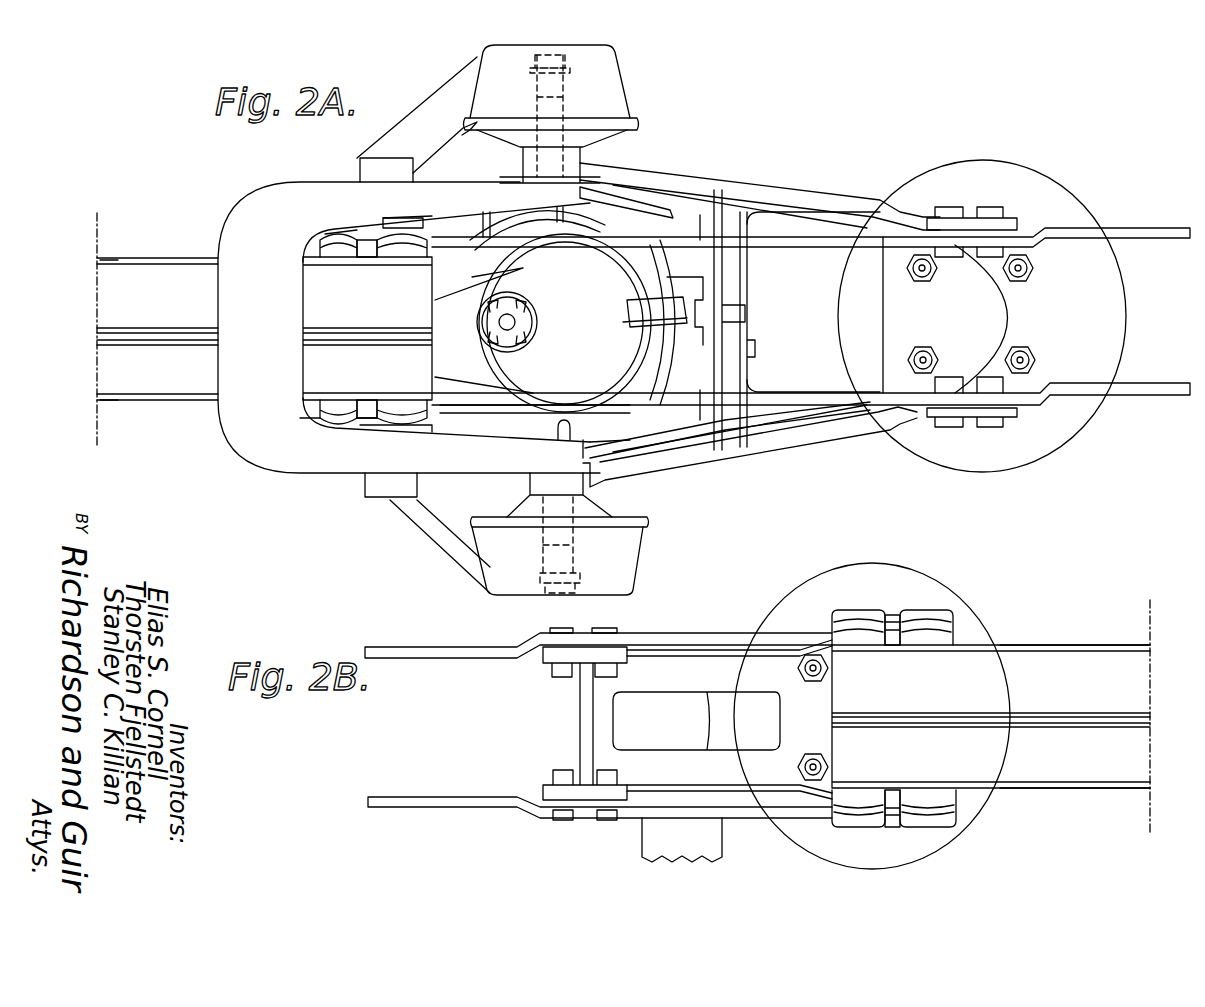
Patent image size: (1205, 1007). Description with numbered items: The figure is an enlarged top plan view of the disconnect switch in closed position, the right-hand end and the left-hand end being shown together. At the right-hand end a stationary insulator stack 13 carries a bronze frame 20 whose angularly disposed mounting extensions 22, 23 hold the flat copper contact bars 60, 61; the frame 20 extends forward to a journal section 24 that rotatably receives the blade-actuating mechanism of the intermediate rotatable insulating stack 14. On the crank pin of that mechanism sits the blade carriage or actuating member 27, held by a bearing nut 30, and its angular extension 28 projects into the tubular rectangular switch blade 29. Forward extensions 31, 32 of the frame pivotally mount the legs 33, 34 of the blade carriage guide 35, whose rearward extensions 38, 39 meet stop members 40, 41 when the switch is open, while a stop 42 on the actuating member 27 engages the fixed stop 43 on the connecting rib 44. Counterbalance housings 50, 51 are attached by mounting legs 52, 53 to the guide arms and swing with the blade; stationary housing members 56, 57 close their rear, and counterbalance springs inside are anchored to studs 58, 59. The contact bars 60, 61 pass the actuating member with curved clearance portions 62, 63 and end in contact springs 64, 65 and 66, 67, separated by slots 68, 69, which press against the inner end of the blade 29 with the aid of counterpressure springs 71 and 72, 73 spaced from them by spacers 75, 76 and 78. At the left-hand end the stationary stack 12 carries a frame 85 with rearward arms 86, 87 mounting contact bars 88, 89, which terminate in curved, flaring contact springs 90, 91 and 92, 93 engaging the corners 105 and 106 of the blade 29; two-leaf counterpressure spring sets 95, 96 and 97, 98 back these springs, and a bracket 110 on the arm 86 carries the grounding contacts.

In FIG. 2B, the stationary insulator stack 12 is at (1006, 604).
In FIG. 2A, the stationary insulator stack 13 is at (1088, 199).
In FIG. 2A, the rotatable insulating stack 14 is at (699, 204).
In FIG. 2A, the frame 20 is at (790, 190).
In FIG. 2A, the mounting extension 22 is at (1008, 420).
In FIG. 2A, the mounting extension 23 is at (1010, 210).
In FIG. 2A, the journal section 24 is at (638, 358).
In FIG. 2A, the blade carriage 27 is at (625, 300).
In FIG. 2A, the extension 28 is at (455, 335).
In FIG. 2A, the switch blade 29 is at (166, 262).
In FIG. 2B, the switch blade 29 is at (1130, 658).
In FIG. 2A, the bearing nut 30 is at (522, 318).
In FIG. 2A, the extension 31 is at (580, 485).
In FIG. 2A, the extension 32 is at (585, 157).
In FIG. 2A, the leg of blade carriage guide 33 is at (440, 490).
In FIG. 2A, the leg of blade carriage guide 34 is at (475, 182).
In FIG. 2A, the blade carriage guide 35 is at (232, 388).
In FIG. 2A, the rearward extension of guide arm 38 is at (630, 432).
In FIG. 2A, the rearward extension of guide arm 39 is at (650, 195).
In FIG. 2A, the stop member 40 is at (575, 428).
In FIG. 2A, the stop member 41 is at (550, 216).
In FIG. 2A, the stop member 42 is at (660, 322).
In FIG. 2A, the fixed stop 43 is at (745, 318).
In FIG. 2A, the connecting rib 44 is at (745, 368).
In FIG. 2A, the outer counterbalance housing 50 is at (630, 565).
In FIG. 2A, the outer counterbalance housing 51 is at (608, 65).
In FIG. 2A, the mounting leg 52 is at (452, 553).
In FIG. 2A, the mounting leg 53 is at (440, 112).
In FIG. 2A, the stationary counterbalance housing member 56 is at (638, 510).
In FIG. 2A, the stationary counterbalance housing member 57 is at (625, 138).
In FIG. 2A, the stud 58 is at (543, 545).
In FIG. 2A, the stud 59 is at (565, 108).
In FIG. 2A, the contact bar 60 is at (815, 392).
In FIG. 2A, the contact bar 61 is at (448, 248).
In FIG. 2A, the curved clearance portion 62 is at (537, 413).
In FIG. 2A, the curved clearance portion 63 is at (585, 242).
In FIG. 2A, the contact spring 64 is at (323, 418).
In FIG. 2A, the contact spring 65 is at (377, 420).
In FIG. 2A, the contact spring 66 is at (335, 250).
In FIG. 2A, the contact spring 67 is at (400, 250).
In FIG. 2A, the slot 68 is at (366, 405).
In FIG. 2A, the slot 69 is at (368, 250).
In FIG. 2A, the counterpressure spring 71 is at (420, 430).
In FIG. 2A, the counterpressure spring 72 is at (352, 228).
In FIG. 2A, the counterpressure spring 73 is at (415, 216).
In FIG. 2A, the spacer 75 is at (338, 425).
In FIG. 2A, the spacer 76 is at (400, 428).
In FIG. 2A, the spacer 78 is at (390, 222).
In FIG. 2B, the frame 85 is at (580, 712).
In FIG. 2B, the arm 86 is at (678, 790).
In FIG. 2B, the arm 87 is at (680, 660).
In FIG. 2B, the contact bar 88 is at (380, 808).
In FIG. 2B, the contact bar 89 is at (405, 655).
In FIG. 2B, the contact spring 90 is at (840, 808).
In FIG. 2B, the contact spring 91 is at (950, 805).
In FIG. 2B, the contact spring 92 is at (838, 630).
In FIG. 2B, the contact spring 93 is at (940, 618).
In FIG. 2B, the counterpressure spring set 95 is at (855, 826).
In FIG. 2B, the counterpressure spring set 96 is at (925, 824).
In FIG. 2B, the counterpressure spring set 97 is at (920, 607).
In FIG. 2B, the counterpressure spring set 98 is at (878, 615).
In FIG. 2A, the corner of switch blade 105 is at (118, 403).
In FIG. 2B, the corner of switch blade 105 is at (1058, 790).
In FIG. 2A, the corner of switch blade 106 is at (112, 262).
In FIG. 2B, the corner of switch blade 106 is at (1032, 643).
In FIG. 2B, the bracket 110 is at (642, 845).